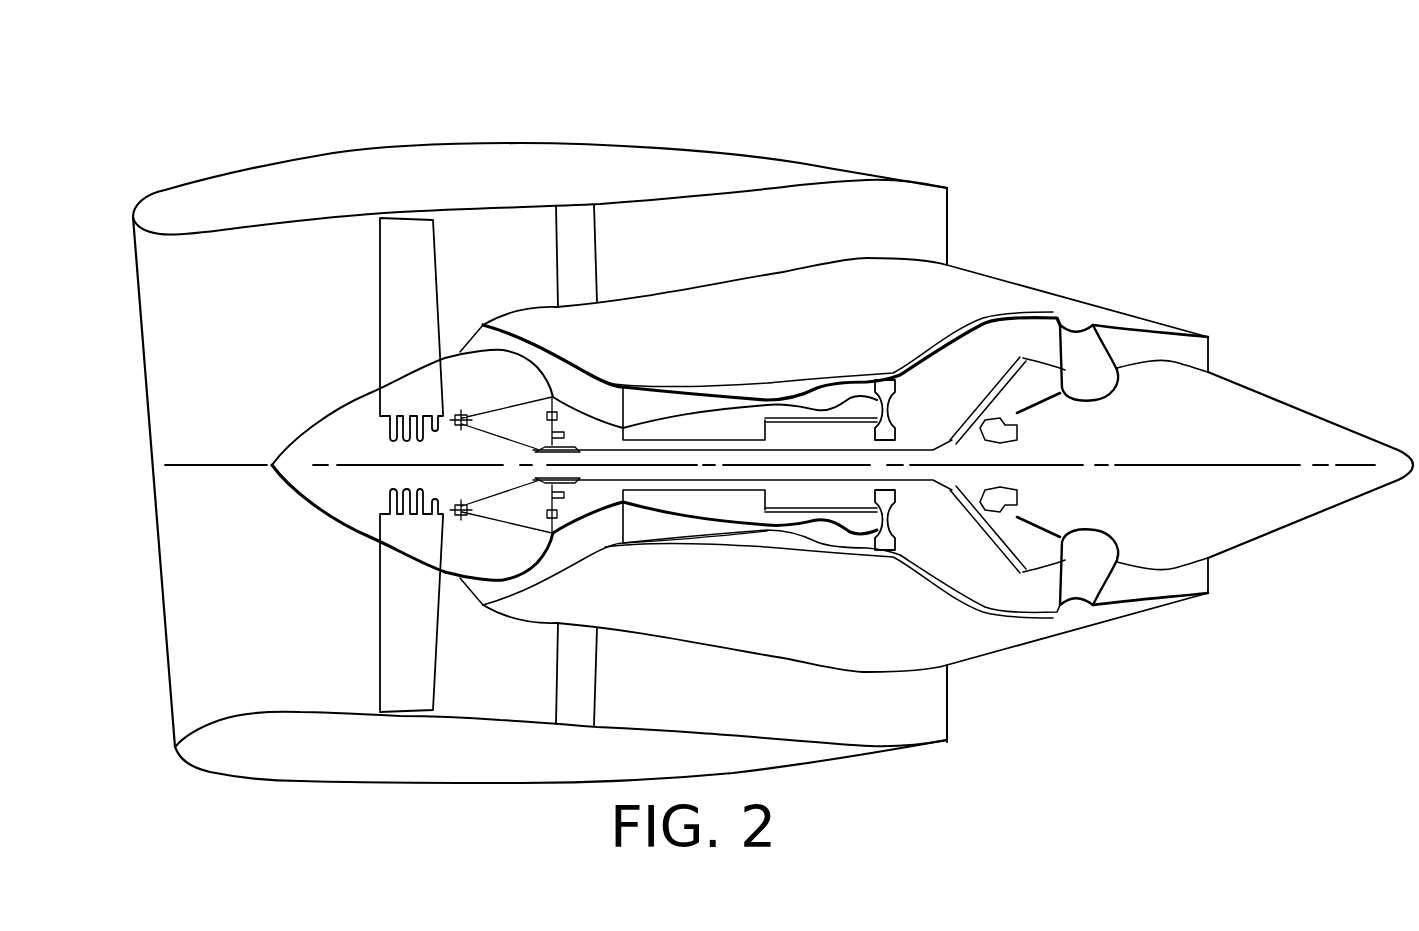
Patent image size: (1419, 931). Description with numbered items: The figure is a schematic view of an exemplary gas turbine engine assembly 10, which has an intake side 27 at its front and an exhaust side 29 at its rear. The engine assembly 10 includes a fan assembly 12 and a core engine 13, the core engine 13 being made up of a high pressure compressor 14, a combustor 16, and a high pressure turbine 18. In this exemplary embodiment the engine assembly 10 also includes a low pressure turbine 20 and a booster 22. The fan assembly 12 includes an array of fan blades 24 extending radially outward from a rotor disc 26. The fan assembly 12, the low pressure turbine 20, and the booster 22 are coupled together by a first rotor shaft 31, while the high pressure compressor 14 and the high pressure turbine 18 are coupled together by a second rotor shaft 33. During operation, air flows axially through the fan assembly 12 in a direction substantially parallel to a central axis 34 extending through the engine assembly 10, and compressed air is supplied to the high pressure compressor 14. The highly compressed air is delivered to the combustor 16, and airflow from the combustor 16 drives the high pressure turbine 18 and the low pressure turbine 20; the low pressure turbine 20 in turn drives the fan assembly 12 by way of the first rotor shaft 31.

The gas turbine engine assembly 10 is at (755, 426).
The fan assembly 12 is at (574, 465).
The core engine 13 is at (784, 288).
The high pressure compressor 14 is at (646, 403).
The combustor 16 is at (837, 397).
The high pressure turbine 18 is at (890, 385).
The low pressure turbine 20 is at (984, 333).
The booster 22 is at (527, 351).
The fan blades 24 is at (404, 294).
The rotor disc 26 is at (410, 538).
The intake side 27 is at (116, 262).
The exhaust side 29 is at (992, 209).
The first rotor shaft 31 is at (793, 450).
The second rotor shaft 33 is at (840, 530).
The central axis 34 is at (198, 465).